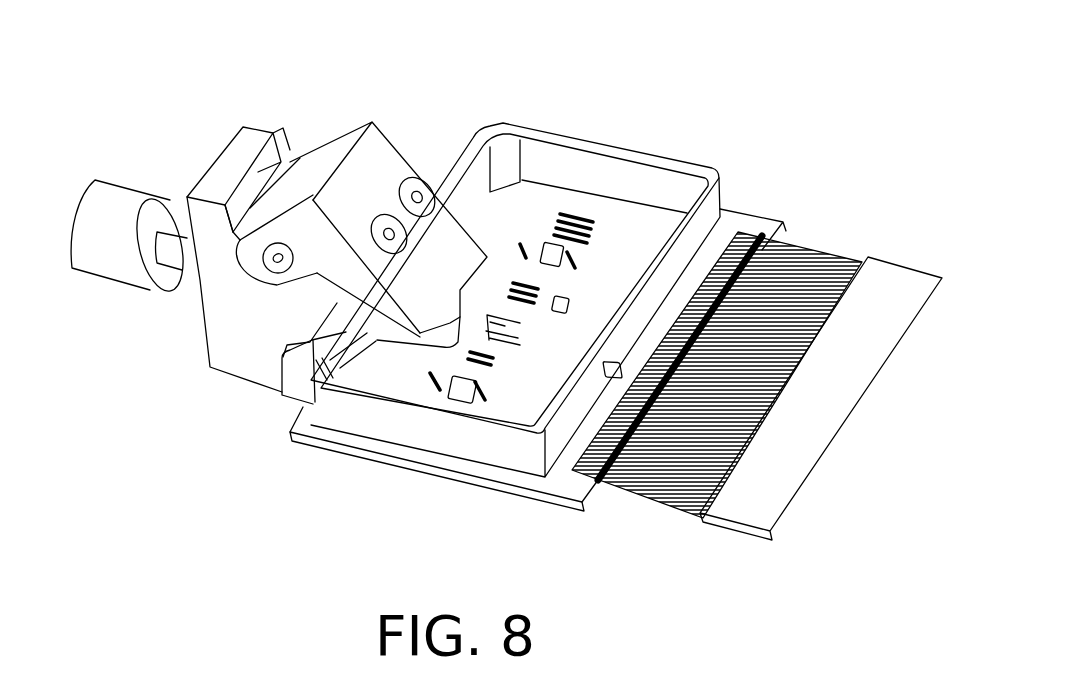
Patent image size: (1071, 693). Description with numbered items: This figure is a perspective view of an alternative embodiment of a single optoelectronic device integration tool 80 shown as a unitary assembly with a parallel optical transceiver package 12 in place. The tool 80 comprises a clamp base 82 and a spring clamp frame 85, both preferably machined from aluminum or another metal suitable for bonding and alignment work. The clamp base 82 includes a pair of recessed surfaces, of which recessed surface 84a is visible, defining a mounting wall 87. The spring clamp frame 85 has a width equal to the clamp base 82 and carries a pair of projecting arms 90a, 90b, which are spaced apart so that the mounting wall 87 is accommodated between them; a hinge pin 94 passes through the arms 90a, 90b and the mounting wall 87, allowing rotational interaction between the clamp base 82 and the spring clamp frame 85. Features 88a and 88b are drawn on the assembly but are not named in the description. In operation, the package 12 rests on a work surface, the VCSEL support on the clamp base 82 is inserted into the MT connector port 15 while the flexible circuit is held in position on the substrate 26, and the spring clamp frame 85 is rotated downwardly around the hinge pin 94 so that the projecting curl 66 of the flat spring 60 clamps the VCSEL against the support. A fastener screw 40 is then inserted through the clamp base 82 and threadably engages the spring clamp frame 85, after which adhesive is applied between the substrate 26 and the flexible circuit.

The parallel optical transceiver package 12 is at (486, 440).
The MT connector port 15 is at (353, 367).
The substrate 26 is at (552, 373).
The fastener screw 40 is at (98, 275).
The flat spring 60 is at (427, 262).
The projecting curl 66 is at (628, 262).
The single optoelectronic device integration tool 80 is at (203, 118).
The clamp base 82 is at (205, 182).
The recessed surface 84a is at (228, 217).
The spring clamp frame 85 is at (378, 222).
The mounting wall 87 is at (322, 147).
The side plate 88a is at (228, 355).
The rear plate 88b is at (266, 128).
The projecting arm 90a is at (262, 275).
The projecting arm 90b is at (297, 140).
The hinge pin 94 is at (372, 122).